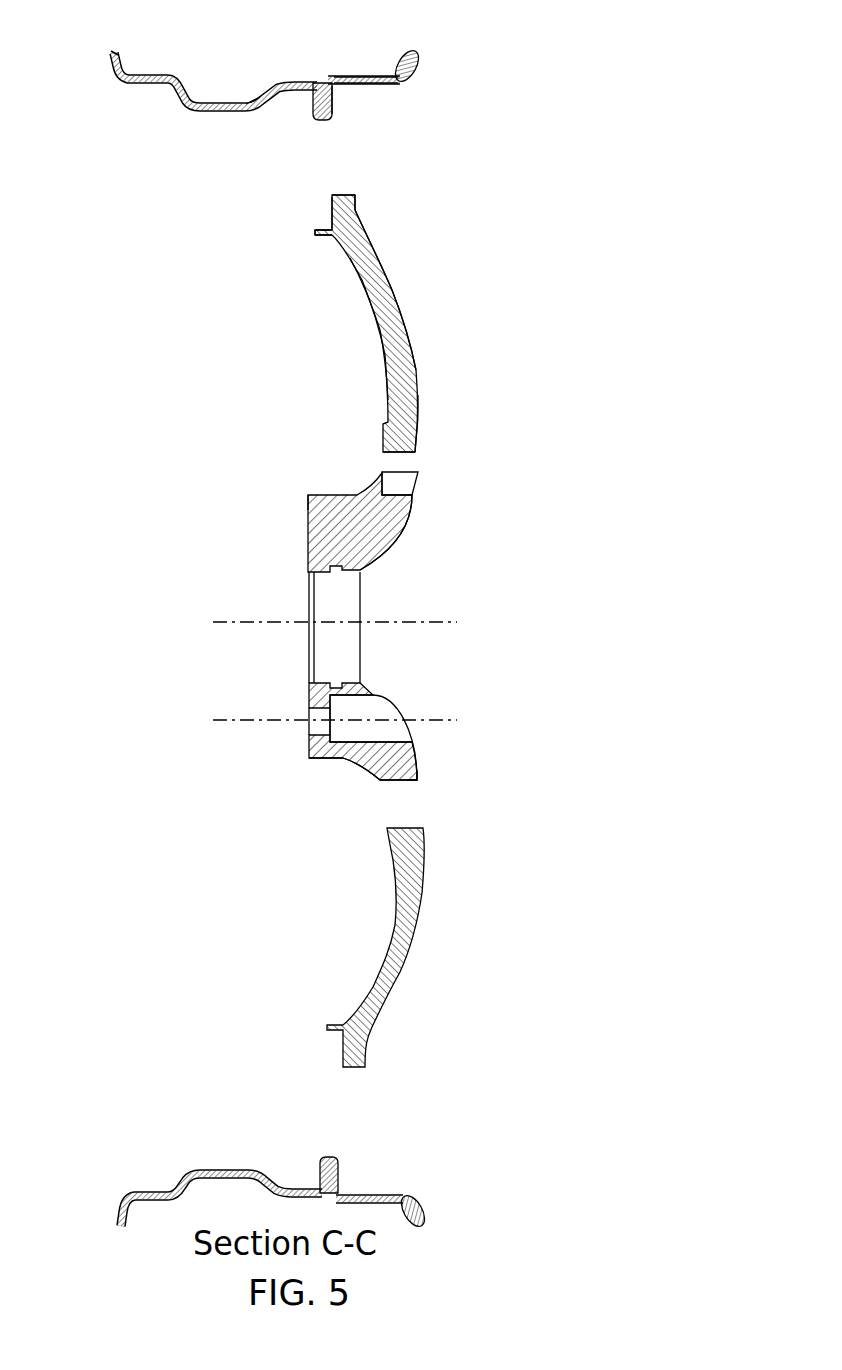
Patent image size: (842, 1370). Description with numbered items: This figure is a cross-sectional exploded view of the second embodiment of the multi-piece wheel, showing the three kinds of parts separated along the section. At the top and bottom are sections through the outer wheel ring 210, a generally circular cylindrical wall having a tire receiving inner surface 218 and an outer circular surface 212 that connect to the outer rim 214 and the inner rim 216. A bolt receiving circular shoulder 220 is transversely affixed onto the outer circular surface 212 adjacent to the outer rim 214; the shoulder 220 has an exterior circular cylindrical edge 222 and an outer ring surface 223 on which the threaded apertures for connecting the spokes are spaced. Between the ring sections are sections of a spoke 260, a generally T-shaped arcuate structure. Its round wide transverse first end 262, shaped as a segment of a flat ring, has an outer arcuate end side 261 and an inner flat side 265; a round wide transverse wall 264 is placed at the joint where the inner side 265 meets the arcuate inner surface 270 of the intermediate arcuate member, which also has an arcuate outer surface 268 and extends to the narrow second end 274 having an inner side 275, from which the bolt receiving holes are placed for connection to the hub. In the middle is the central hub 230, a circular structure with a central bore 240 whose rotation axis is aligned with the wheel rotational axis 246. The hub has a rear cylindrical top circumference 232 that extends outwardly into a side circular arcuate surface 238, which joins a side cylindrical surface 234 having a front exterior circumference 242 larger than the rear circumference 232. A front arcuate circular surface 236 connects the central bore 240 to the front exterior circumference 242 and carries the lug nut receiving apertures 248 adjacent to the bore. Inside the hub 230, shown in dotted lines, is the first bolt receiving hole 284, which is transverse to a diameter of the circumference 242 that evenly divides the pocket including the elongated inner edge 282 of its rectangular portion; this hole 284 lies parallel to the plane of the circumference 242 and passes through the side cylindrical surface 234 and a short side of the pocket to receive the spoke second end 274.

The outer wheel ring 210 is at (150, 38).
The outer circular surface 212 is at (373, 85).
The outer rim 214 is at (416, 52).
The inner rim 216 is at (110, 60).
The tire receiving inner surface 218 is at (346, 38).
The bolt receiving circular shoulder 220 is at (290, 110).
The exterior circular cylindrical edge 222 is at (320, 122).
The outer ring surface 223 is at (333, 104).
The central hub 230 is at (564, 612).
The rear cylindrical top circumference 232 is at (308, 496).
The side cylindrical surface 234 is at (405, 781).
The front arcuate circular surface 236 is at (393, 537).
The side circular arcuate surface 238 is at (343, 760).
The central bore 240 is at (326, 646).
The front exterior circumference 242 is at (418, 779).
The wheel rotational axis 246 is at (365, 662).
The lug nut receiving aperture 248 is at (390, 733).
The spoke 260 is at (520, 296).
The outer arcuate end side 261 is at (346, 195).
The round wide transverse first end 262 is at (370, 204).
The round wide transverse wall 264 is at (315, 234).
The inner flat side 265 is at (331, 211).
The arcuate outer surface 268 is at (402, 300).
The arcuate inner surface 270 is at (378, 311).
The narrow second end 274 is at (428, 438).
The inner side 275 is at (383, 444).
The elongated inner edge 282 is at (406, 455).
The first bolt receiving hole 284 is at (399, 483).